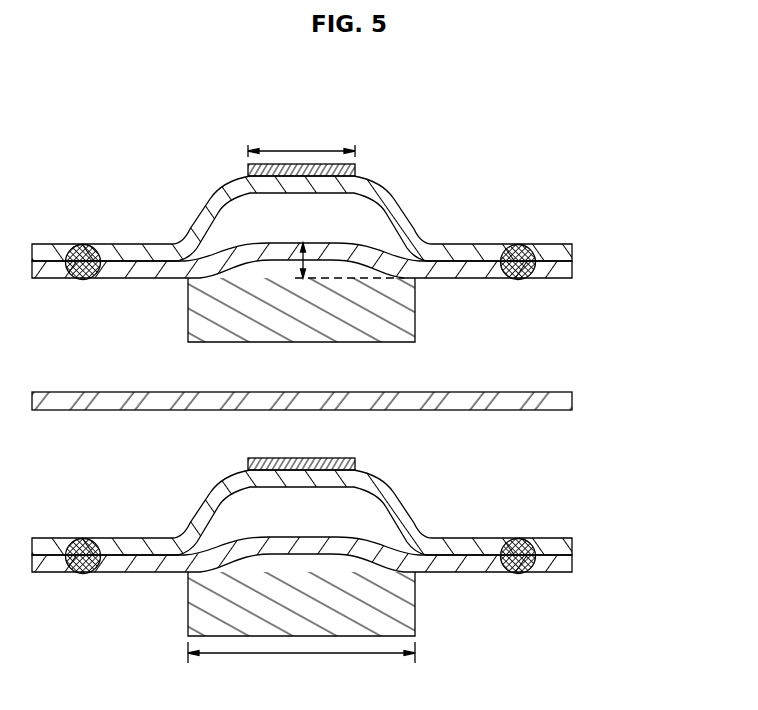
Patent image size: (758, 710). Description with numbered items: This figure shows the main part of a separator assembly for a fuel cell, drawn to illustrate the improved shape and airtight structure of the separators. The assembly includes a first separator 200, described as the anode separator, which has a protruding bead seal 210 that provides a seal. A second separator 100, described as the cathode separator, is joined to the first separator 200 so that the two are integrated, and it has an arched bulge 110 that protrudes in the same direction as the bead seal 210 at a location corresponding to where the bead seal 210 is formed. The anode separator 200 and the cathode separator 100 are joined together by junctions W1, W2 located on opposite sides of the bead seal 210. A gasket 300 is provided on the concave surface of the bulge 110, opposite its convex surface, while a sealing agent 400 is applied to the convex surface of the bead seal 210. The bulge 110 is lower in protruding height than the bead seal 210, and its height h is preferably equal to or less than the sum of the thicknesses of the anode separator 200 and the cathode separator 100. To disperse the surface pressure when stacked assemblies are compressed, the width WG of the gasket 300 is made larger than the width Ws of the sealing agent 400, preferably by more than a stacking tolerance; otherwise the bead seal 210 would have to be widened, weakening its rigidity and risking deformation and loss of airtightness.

The second separator 100 is at (563, 267).
The bulge 110 is at (237, 262).
The first separator 200 is at (566, 254).
The bead seal 210 is at (402, 208).
The gasket 300 is at (208, 310).
The sealing agent 400 is at (356, 165).
The junction W1 is at (521, 258).
The junction W2 is at (83, 260).
The height of the bulge h is at (305, 267).
The width of the sealing agent Ws is at (301, 137).
The width of the gasket WG is at (301, 670).